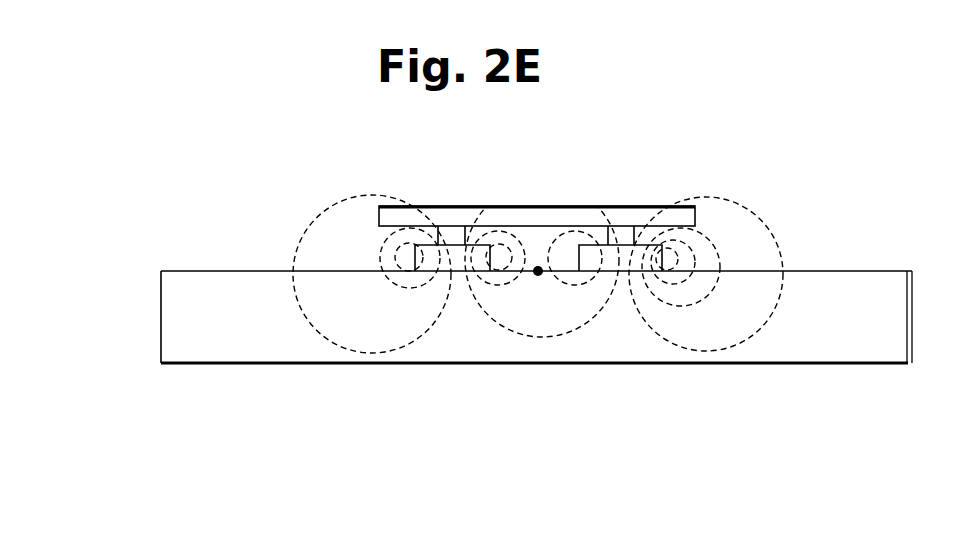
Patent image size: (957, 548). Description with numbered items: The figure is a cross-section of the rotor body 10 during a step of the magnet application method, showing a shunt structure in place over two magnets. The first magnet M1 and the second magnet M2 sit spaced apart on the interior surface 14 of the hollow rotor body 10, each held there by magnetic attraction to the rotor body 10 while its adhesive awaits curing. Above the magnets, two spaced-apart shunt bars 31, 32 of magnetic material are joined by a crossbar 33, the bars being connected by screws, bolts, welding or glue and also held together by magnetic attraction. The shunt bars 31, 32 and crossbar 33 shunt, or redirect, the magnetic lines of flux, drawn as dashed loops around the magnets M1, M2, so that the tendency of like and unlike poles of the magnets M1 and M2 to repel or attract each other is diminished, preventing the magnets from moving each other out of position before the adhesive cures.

The rotor body 10 is at (238, 312).
The interior surface 14 is at (830, 268).
The shunt bar 31 is at (616, 232).
The shunt bar 32 is at (495, 217).
The crossbar 33 is at (450, 217).
The first magnet M1 is at (448, 258).
The second magnet M2 is at (635, 258).